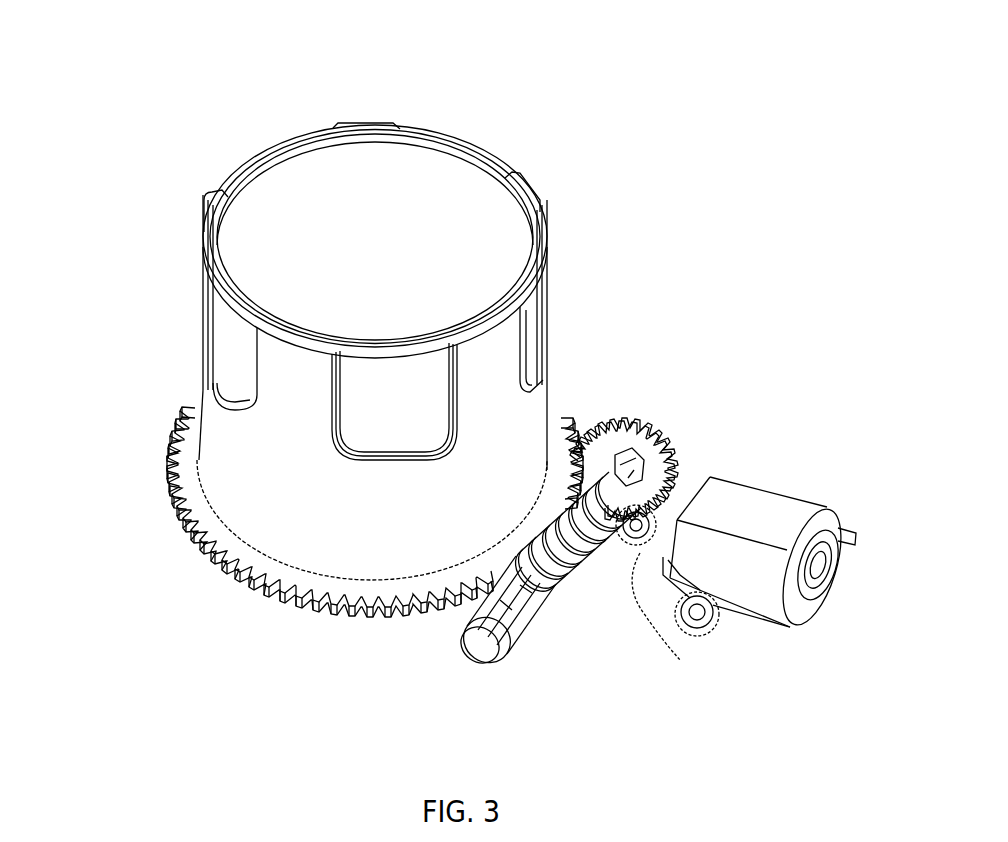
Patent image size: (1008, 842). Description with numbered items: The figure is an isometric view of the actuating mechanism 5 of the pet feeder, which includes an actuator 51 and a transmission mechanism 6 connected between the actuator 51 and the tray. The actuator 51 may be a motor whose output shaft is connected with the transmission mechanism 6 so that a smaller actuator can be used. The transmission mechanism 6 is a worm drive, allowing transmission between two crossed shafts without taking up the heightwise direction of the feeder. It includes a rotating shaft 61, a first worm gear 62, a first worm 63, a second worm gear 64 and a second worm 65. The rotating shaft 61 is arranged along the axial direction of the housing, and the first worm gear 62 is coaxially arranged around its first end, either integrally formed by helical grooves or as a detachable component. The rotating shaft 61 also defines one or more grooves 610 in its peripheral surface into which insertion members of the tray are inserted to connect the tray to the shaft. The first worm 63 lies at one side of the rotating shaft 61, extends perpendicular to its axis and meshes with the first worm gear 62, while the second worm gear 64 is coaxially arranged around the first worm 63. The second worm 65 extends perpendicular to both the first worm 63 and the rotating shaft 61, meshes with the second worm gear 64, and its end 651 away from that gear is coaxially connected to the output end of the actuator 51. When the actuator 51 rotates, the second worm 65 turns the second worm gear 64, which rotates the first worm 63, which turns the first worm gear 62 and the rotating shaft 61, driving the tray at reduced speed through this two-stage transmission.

The actuating mechanism 5 is at (363, 102).
The transmission mechanism 6 is at (576, 241).
The rotating shaft 61 is at (500, 392).
The groove 610 is at (232, 352).
The first worm gear 62 is at (568, 435).
The first worm 63 is at (540, 590).
The second worm gear 64 is at (667, 450).
The second worm 65 is at (677, 520).
The end of the second worm 651 is at (637, 600).
The actuator 51 is at (707, 563).